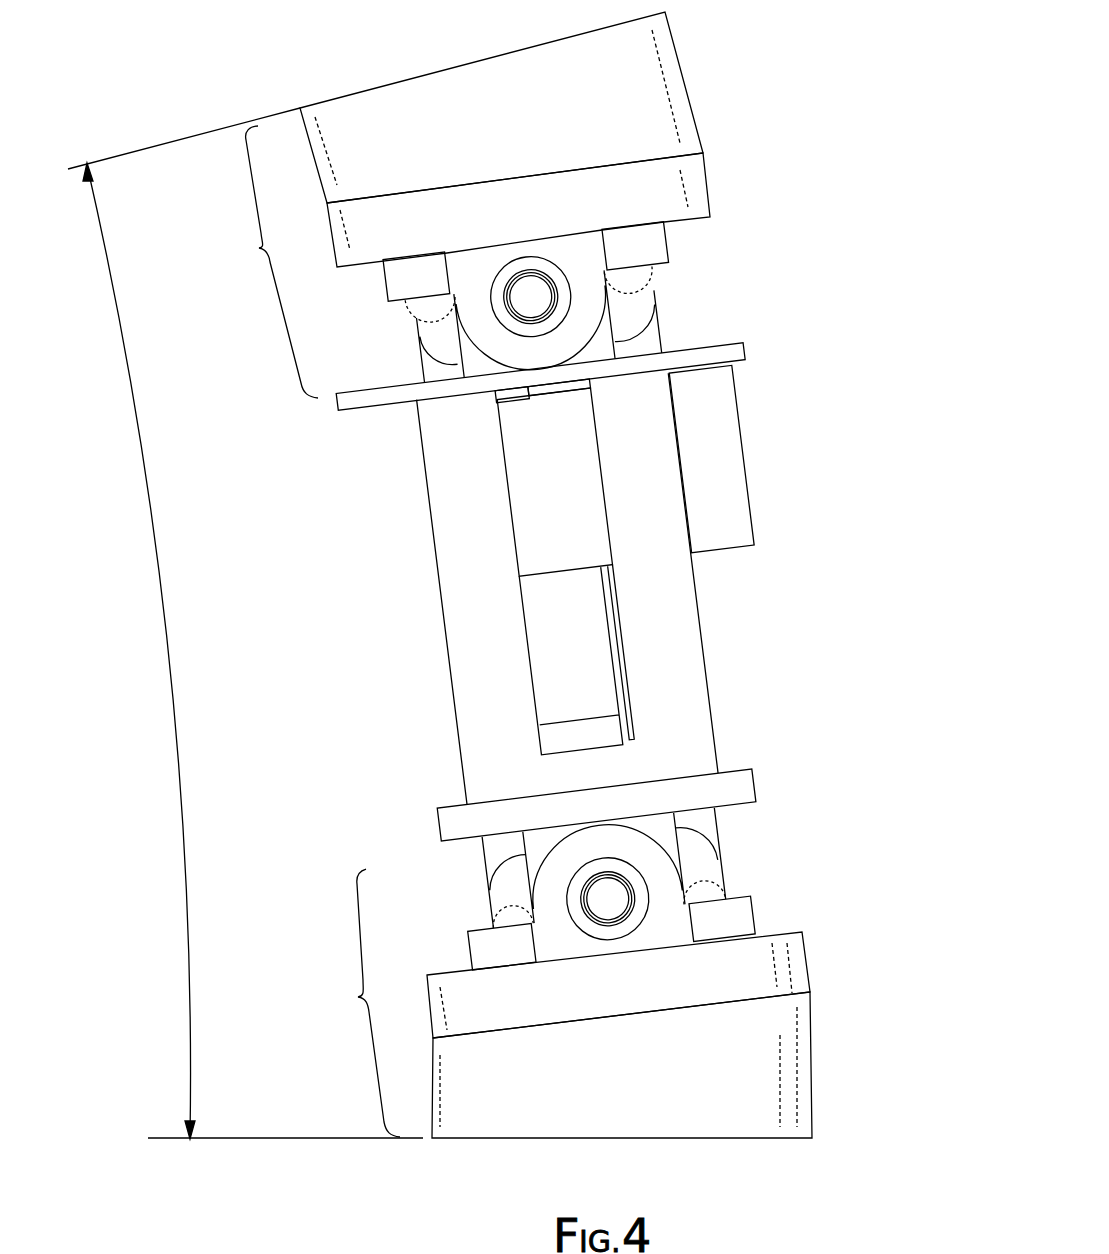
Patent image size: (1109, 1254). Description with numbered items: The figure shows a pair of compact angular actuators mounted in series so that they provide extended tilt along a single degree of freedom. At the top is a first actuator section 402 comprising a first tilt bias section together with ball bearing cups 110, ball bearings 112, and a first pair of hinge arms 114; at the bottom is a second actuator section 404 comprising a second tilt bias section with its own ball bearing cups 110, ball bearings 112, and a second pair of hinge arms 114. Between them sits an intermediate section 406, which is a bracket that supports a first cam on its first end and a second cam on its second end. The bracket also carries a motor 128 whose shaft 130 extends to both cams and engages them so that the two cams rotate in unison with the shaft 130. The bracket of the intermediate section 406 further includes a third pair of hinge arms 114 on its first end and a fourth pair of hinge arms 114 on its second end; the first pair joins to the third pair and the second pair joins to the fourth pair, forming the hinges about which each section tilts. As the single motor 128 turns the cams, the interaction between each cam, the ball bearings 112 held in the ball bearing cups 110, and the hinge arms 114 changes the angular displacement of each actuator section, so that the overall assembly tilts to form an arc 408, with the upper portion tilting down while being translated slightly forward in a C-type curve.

The ball bearing cups 110 is at (670, 183).
The ball bearings 112 is at (655, 278).
The pair of hinge arms 114 is at (492, 347).
The motor 128 is at (717, 462).
The shaft 130 is at (590, 383).
The first actuator section 402 is at (259, 248).
The second actuator section 404 is at (358, 997).
The intermediate section 406 is at (700, 722).
The arc 408 is at (180, 802).